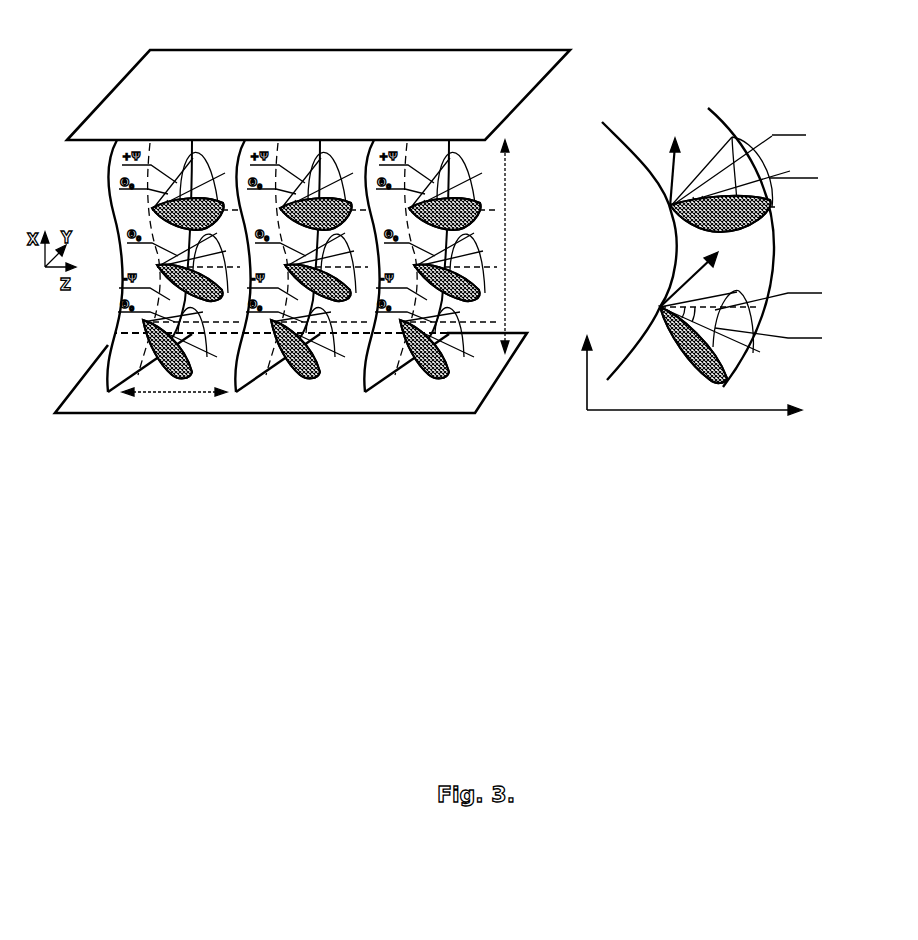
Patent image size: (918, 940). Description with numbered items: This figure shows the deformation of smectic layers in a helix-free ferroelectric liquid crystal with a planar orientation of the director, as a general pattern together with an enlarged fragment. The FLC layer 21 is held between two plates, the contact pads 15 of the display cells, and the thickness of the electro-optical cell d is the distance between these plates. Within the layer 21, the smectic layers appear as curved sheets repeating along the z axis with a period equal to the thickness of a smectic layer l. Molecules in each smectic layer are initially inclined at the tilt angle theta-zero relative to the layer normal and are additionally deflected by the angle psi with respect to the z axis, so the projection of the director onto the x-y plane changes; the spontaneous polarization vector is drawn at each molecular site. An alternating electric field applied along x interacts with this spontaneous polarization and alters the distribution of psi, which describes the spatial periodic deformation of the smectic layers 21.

The contact pads 15 is at (517, 97).
The layer of FLC 21 is at (107, 197).
The thickness of an electro-optical cell d is at (516, 246).
The thickness of a smectic layer l is at (158, 392).